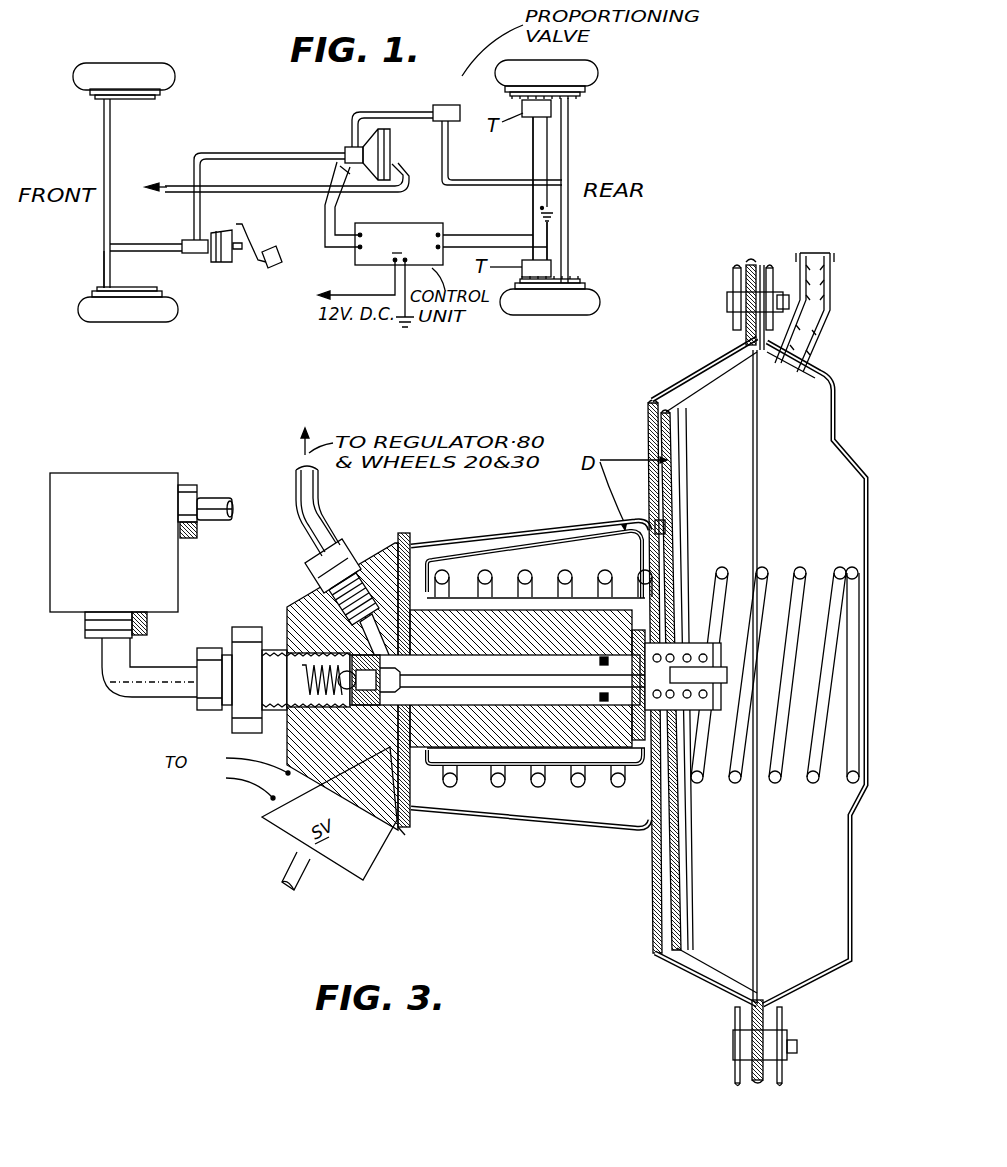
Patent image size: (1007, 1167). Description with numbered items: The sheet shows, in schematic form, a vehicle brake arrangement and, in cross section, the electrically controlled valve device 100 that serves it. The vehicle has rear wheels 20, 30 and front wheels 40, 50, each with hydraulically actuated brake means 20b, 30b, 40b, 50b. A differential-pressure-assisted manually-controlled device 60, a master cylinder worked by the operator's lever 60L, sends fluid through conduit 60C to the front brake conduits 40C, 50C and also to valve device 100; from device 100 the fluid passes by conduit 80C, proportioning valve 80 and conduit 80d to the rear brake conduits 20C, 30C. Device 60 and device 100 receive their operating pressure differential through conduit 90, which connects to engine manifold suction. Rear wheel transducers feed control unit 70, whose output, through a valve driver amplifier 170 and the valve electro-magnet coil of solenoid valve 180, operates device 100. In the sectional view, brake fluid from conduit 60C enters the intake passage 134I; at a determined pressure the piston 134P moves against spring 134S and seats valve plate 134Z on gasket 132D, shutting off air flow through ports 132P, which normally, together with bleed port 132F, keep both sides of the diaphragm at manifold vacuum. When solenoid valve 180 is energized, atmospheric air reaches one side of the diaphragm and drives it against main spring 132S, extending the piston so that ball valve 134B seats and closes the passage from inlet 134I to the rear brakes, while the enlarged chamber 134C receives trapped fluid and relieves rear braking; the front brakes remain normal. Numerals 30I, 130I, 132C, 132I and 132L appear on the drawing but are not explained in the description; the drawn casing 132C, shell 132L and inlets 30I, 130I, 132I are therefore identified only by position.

In FIG. 1, the rear wheel 20 is at (597, 72).
In FIG. 1, the rear wheel brake means 20b is at (583, 97).
In FIG. 1, the rear brake conduit 20C is at (568, 152).
In FIG. 1, the rear wheel 30 is at (572, 308).
In FIG. 1, the rear wheel brake means 30b is at (578, 283).
In FIG. 1, the rear brake conduit 30C is at (568, 235).
In FIG. 1, the inlet to booster 30I is at (338, 168).
In FIG. 1, the front wheel 40 is at (90, 66).
In FIG. 1, the front wheel brake means 40b is at (133, 91).
In FIG. 1, the front brake conduit 40C is at (102, 150).
In FIG. 1, the front wheel 50 is at (112, 316).
In FIG. 1, the front wheel brake means 50b is at (125, 290).
In FIG. 1, the front brake conduit 50C is at (105, 268).
In FIG. 1, the differential-pressure-assisted manually-controlled device 60 is at (220, 264).
In FIG. 1, the conduit 60C is at (246, 152).
In FIG. 3, the conduit 60C is at (129, 685).
In FIG. 1, the operator's lever 60L is at (276, 272).
In FIG. 1, the control unit 70 is at (436, 213).
In FIG. 1, the proportioning valve 80 is at (445, 108).
In FIG. 1, the conduit 80C is at (373, 102).
In FIG. 3, the conduit 80C is at (333, 526).
In FIG. 1, the conduit 80d is at (455, 165).
In FIG. 1, the conduit 90 is at (375, 187).
In FIG. 3, the conduit 90 is at (830, 310).
In FIG. 1, the electrically controlled valve device 100 is at (392, 155).
In FIG. 3, the electrically controlled valve device 100 is at (560, 873).
In FIG. 3, the solenoid valve inlet 130I is at (210, 502).
In FIG. 3, the casing 132C is at (558, 753).
In FIG. 3, the gasket 132D is at (657, 724).
In FIG. 3, the bleed port 132F is at (665, 525).
In FIG. 3, the casing inlet 132I is at (400, 767).
In FIG. 3, the shell 132L is at (815, 410).
In FIG. 3, the ports 132P is at (707, 656).
In FIG. 3, the main spring 132S is at (498, 775).
In FIG. 3, the ball valve 134B is at (305, 607).
In FIG. 3, the chamber 134C is at (389, 688).
In FIG. 3, the intake passage 134I is at (281, 667).
In FIG. 3, the piston 134P is at (487, 686).
In FIG. 3, the spring 134S is at (707, 583).
In FIG. 3, the valve plate 134Z is at (622, 637).
In FIG. 3, the valve driver amplifier 170 is at (222, 752).
In FIG. 3, the solenoid valve 180 is at (258, 818).